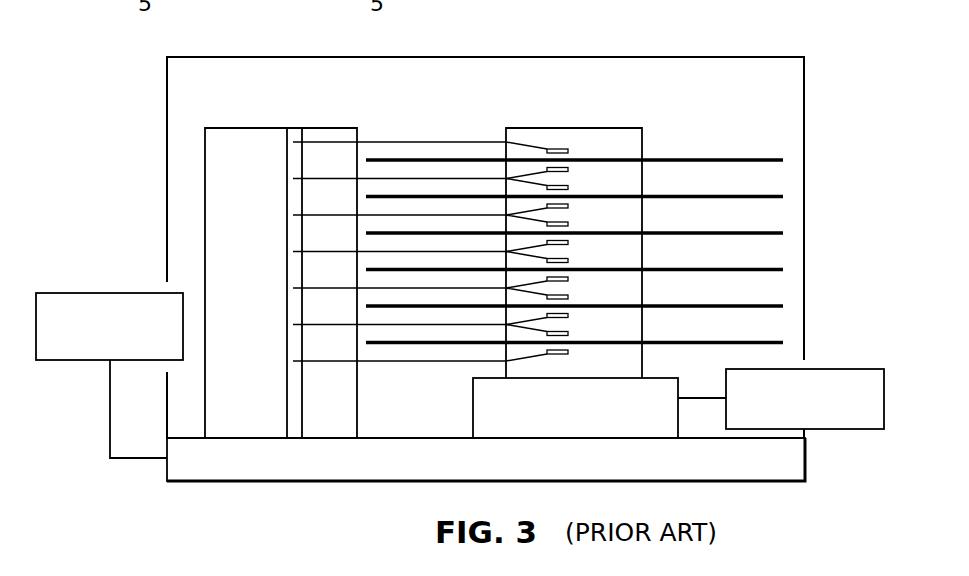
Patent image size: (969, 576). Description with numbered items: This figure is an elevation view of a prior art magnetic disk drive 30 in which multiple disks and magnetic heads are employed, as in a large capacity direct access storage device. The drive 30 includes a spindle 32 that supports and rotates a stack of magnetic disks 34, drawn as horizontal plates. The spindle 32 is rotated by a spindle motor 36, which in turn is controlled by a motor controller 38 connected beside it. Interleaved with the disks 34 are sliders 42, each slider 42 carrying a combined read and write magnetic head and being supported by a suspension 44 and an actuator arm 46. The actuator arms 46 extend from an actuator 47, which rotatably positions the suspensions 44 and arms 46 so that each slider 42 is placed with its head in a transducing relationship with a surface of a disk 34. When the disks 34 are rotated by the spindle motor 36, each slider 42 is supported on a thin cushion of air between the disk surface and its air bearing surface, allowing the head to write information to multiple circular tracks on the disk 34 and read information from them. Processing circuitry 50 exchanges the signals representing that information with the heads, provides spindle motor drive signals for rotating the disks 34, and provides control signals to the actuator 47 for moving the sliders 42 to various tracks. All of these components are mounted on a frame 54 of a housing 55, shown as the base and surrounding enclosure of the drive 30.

The magnetic disk drive 30 is at (576, 249).
The spindle 32 is at (632, 128).
The magnetic disk 34 is at (783, 161).
The spindle motor 36 is at (561, 419).
The motor controller 38 is at (841, 430).
The slider 42 is at (568, 173).
The suspension 44 is at (538, 182).
The actuator arm 46 is at (477, 179).
The actuator 47 is at (235, 128).
The processing circuitry 50 is at (81, 293).
The frame 54 is at (222, 482).
The housing 55 is at (509, 47).